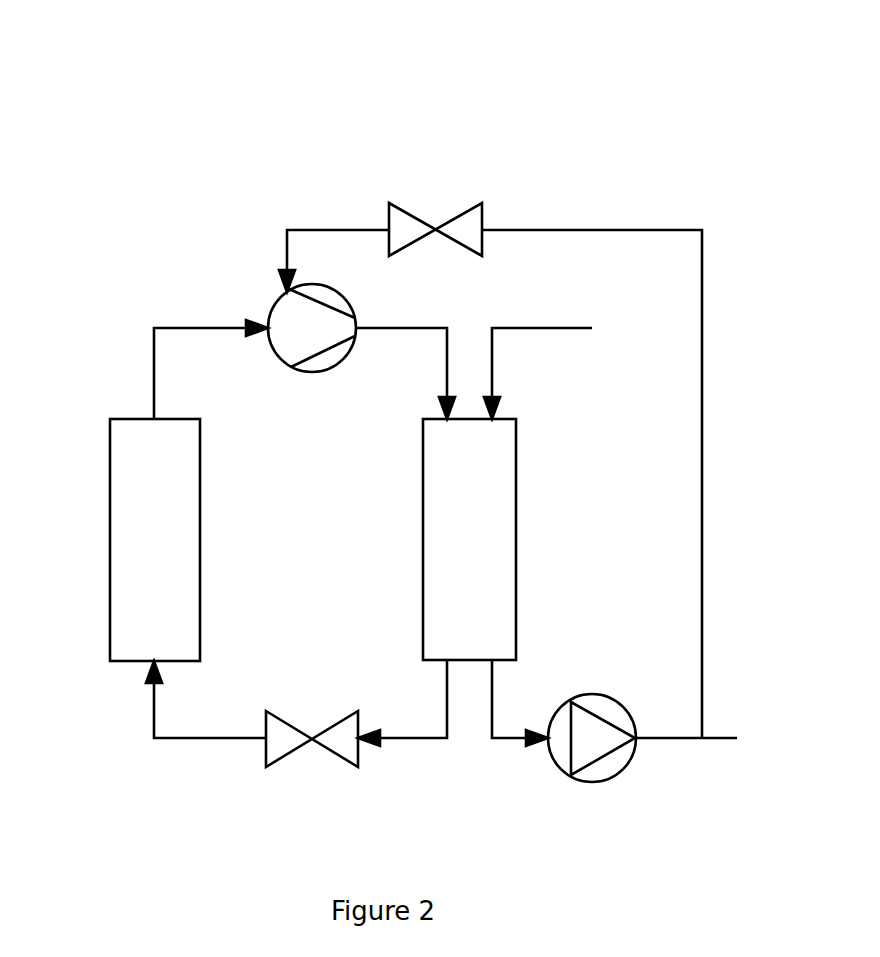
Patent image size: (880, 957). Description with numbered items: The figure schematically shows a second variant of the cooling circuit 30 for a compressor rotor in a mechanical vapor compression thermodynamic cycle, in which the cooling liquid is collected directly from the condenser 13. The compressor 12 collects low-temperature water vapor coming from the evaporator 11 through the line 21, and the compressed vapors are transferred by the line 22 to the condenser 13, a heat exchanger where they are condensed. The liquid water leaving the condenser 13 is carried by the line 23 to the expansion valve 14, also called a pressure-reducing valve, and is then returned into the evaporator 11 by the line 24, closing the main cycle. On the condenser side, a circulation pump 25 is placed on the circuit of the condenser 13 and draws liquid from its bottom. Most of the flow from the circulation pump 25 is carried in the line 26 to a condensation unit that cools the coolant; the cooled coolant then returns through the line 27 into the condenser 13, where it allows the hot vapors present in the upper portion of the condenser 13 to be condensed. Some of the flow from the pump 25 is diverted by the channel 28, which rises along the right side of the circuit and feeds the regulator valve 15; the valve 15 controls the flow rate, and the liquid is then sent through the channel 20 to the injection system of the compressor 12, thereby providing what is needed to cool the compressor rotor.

The cooling circuit 30 is at (250, 100).
The evaporator 11 is at (114, 523).
The compressor 12 is at (320, 367).
The condenser 13 is at (510, 517).
The expansion valve 14 is at (333, 723).
The regulator valve 15 is at (463, 222).
The channel 20 is at (342, 229).
The line 21 is at (206, 330).
The line 22 is at (387, 330).
The line 23 is at (407, 740).
The line 24 is at (224, 735).
The circulation pump 25 is at (610, 772).
The line 26 is at (733, 740).
The line 27 is at (554, 330).
The channel 28 is at (642, 229).